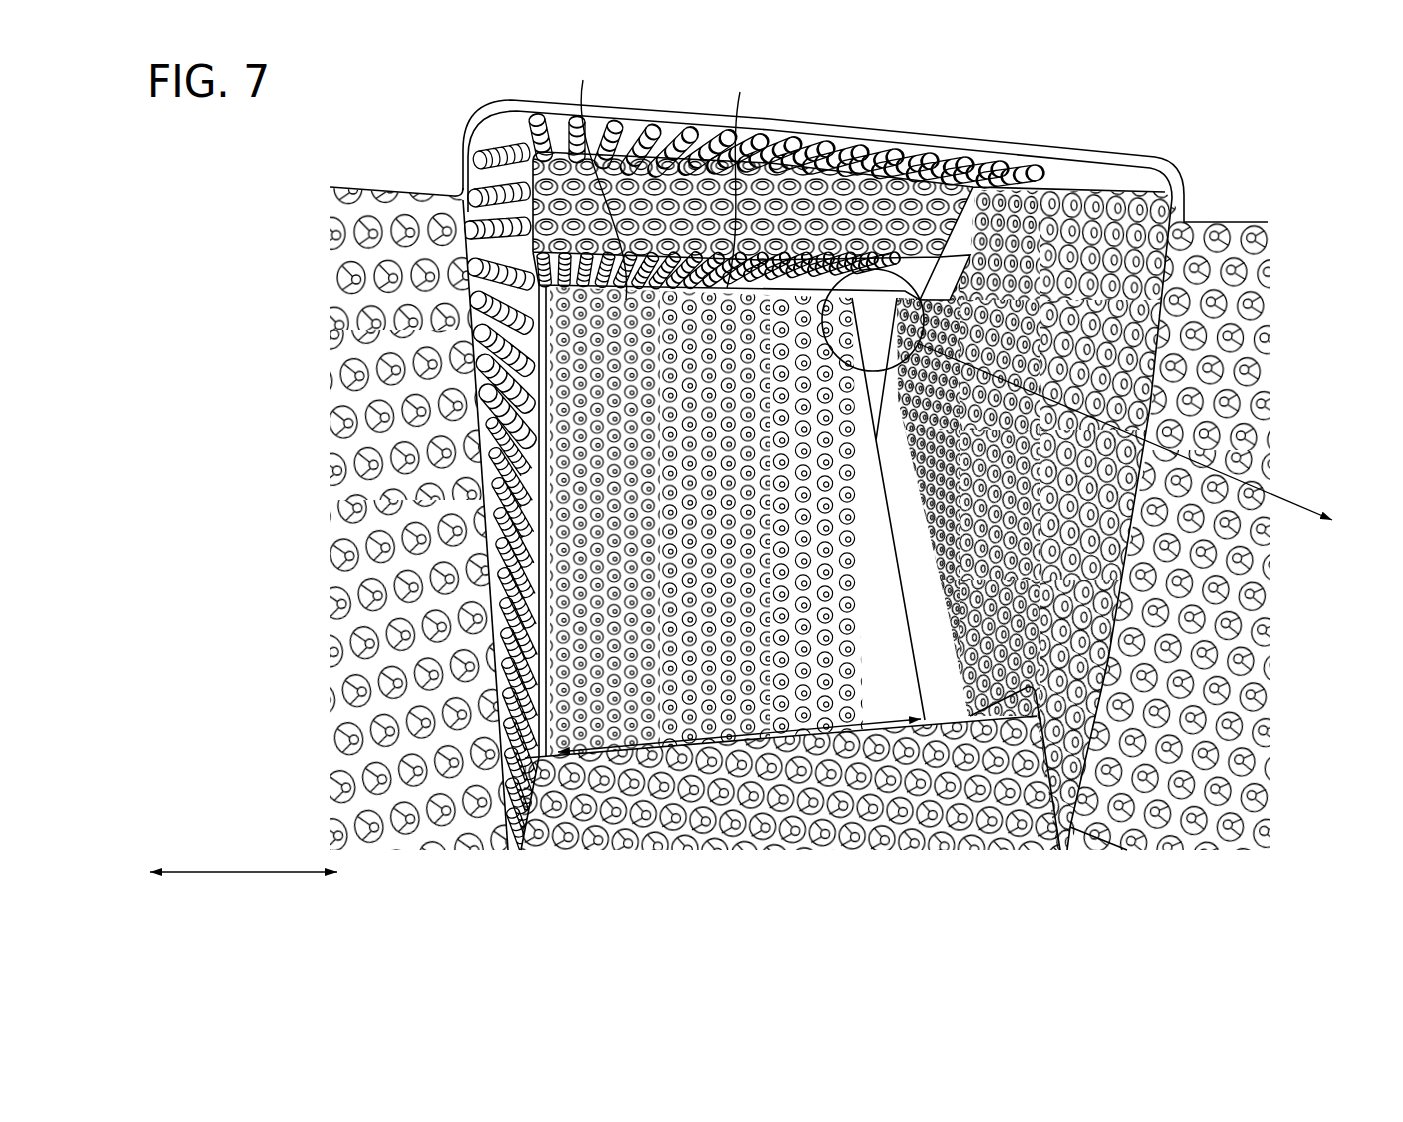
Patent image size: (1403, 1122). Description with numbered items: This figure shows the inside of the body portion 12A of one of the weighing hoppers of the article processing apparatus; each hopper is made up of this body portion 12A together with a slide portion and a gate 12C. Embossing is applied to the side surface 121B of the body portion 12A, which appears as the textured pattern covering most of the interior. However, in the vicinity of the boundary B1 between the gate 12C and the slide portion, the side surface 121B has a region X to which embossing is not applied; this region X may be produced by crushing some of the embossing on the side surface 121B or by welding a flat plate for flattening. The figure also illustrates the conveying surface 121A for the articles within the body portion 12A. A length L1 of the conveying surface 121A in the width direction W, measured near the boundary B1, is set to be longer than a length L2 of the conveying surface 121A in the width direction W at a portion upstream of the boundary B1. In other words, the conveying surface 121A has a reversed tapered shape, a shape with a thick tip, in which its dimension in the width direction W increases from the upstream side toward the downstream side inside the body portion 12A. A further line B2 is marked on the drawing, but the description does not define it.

The body portion 12A is at (460, 128).
The gate 12C is at (828, 218).
The conveying surface 121A is at (645, 463).
The side surface 121B is at (1022, 330).
The length L1 is at (598, 175).
The boundary B1 is at (736, 176).
The second boundary B2 is at (622, 754).
The length L2 is at (836, 727).
The width direction W is at (243, 856).
The region X is at (1137, 442).